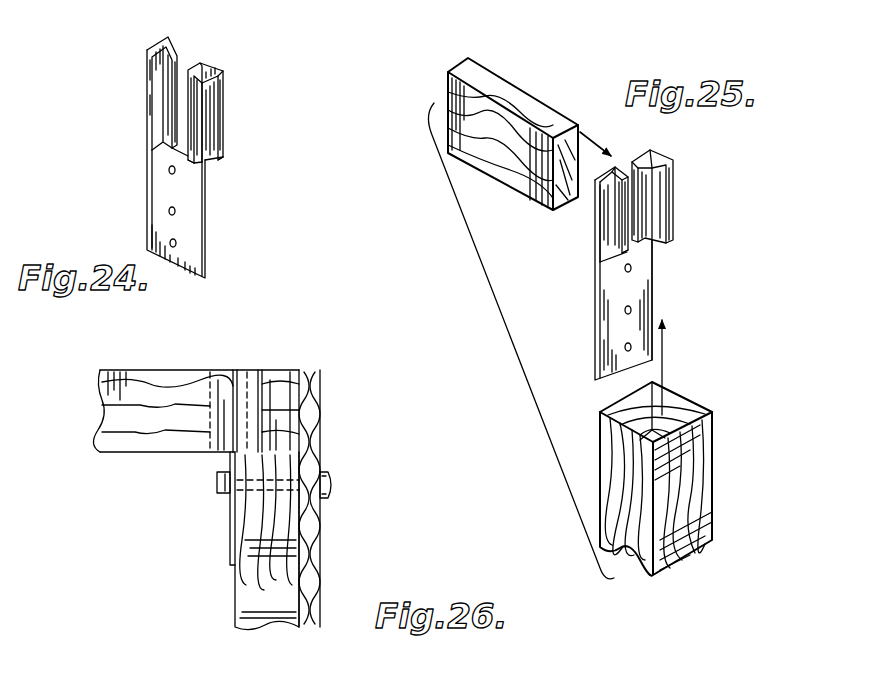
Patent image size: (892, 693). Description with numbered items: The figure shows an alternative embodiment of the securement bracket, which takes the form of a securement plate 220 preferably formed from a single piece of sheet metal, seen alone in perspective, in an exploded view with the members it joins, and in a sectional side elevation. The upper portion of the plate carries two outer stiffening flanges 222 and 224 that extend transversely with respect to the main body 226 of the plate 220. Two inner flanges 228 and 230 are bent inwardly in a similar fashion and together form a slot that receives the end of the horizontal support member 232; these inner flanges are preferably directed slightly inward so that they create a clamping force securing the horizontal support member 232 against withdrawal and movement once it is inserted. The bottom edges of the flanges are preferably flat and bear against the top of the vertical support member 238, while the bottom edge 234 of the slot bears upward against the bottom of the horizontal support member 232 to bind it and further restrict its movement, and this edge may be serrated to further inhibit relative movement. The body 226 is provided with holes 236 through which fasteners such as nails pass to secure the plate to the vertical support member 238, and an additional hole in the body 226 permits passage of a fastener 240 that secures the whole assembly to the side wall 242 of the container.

In FIG. 24, the securement plate 220 is at (211, 247).
In FIG. 24, the outer stiffening flange 222 is at (153, 43).
In FIG. 25, the outer stiffening flange 222 is at (676, 190).
In FIG. 24, the outer stiffening flange 224 is at (225, 133).
In FIG. 25, the outer stiffening flange 224 is at (602, 249).
In FIG. 24, the main body 226 is at (202, 200).
In FIG. 24, the inner flange 228 is at (176, 56).
In FIG. 24, the inner flange 230 is at (201, 65).
In FIG. 25, the horizontal support member 232 is at (507, 80).
In FIG. 26, the horizontal support member 232 is at (181, 422).
In FIG. 24, the bottom edge of the slot 234 is at (163, 150).
In FIG. 25, the holes 236 is at (633, 308).
In FIG. 25, the vertical support member 238 is at (712, 478).
In FIG. 26, the vertical support member 238 is at (281, 608).
In FIG. 25, the fastener 240 is at (647, 268).
In FIG. 26, the fastener 240 is at (333, 482).
In FIG. 26, the side wall 242 is at (321, 547).